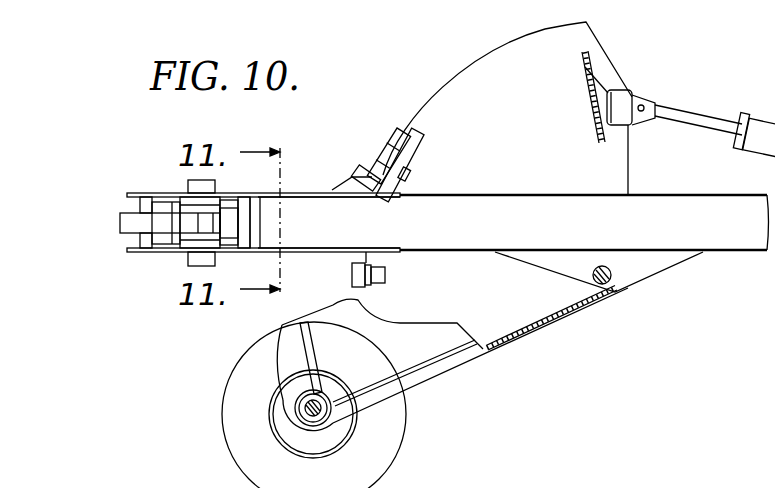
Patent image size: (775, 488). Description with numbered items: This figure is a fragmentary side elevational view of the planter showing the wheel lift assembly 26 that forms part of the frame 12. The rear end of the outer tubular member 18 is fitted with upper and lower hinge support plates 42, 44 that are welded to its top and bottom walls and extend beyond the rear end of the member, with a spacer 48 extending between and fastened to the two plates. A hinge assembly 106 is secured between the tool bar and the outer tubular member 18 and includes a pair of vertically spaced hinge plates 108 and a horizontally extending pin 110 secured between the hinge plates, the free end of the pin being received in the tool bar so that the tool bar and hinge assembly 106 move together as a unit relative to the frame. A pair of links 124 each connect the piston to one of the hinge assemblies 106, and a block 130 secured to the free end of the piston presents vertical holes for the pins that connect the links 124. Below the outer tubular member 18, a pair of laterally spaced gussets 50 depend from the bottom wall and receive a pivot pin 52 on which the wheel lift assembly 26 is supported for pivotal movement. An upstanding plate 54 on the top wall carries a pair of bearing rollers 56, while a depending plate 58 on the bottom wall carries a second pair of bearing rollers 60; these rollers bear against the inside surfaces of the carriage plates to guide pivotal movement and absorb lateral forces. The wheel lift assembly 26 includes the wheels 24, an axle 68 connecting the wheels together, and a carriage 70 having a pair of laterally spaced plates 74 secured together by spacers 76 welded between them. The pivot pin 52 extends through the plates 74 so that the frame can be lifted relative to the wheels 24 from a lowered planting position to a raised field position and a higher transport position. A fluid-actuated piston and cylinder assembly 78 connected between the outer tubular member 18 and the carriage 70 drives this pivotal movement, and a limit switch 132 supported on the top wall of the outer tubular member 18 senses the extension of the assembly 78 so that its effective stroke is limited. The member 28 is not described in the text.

The frame 12 is at (747, 265).
The outer tubular frame member 18 is at (668, 198).
The ground-engaging wheels 24 is at (234, 416).
The wheel lift assembly 26 is at (587, 342).
The lower member 28 is at (598, 480).
The upper hinge support plate 42 is at (295, 193).
The lower hinge support plate 44 is at (298, 252).
The spacer 48 is at (140, 207).
The gussets 50 is at (667, 265).
The pivot pin 52 is at (612, 282).
The upstanding plate 54 is at (418, 137).
The bearing rollers 56 is at (385, 150).
The depending plate 58 is at (368, 300).
The bearing rollers 60 is at (350, 275).
The axle 68 is at (318, 400).
The carriage 70 is at (472, 43).
The carriage plates 74 is at (448, 372).
The spacers 76 is at (617, 90).
The piston and cylinder assembly 78 is at (764, 110).
The hinge assembly 106 is at (114, 246).
The hinge plates 108 is at (185, 207).
The horizontally extending pin 110 is at (125, 222).
The links 124 is at (172, 200).
The block 130 is at (228, 226).
The limit switch 132 is at (355, 172).